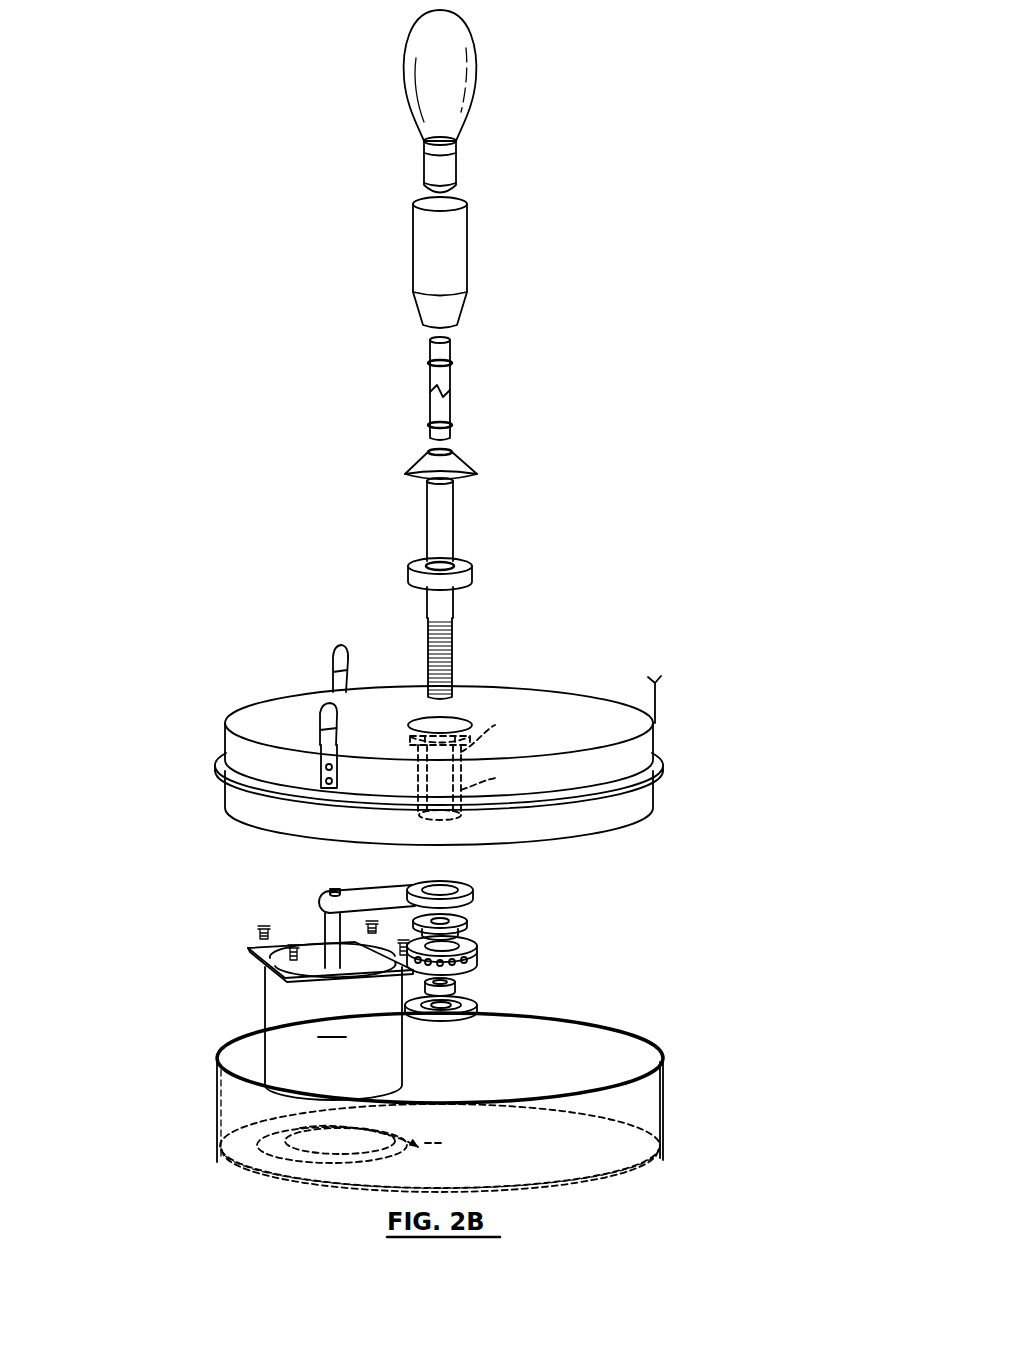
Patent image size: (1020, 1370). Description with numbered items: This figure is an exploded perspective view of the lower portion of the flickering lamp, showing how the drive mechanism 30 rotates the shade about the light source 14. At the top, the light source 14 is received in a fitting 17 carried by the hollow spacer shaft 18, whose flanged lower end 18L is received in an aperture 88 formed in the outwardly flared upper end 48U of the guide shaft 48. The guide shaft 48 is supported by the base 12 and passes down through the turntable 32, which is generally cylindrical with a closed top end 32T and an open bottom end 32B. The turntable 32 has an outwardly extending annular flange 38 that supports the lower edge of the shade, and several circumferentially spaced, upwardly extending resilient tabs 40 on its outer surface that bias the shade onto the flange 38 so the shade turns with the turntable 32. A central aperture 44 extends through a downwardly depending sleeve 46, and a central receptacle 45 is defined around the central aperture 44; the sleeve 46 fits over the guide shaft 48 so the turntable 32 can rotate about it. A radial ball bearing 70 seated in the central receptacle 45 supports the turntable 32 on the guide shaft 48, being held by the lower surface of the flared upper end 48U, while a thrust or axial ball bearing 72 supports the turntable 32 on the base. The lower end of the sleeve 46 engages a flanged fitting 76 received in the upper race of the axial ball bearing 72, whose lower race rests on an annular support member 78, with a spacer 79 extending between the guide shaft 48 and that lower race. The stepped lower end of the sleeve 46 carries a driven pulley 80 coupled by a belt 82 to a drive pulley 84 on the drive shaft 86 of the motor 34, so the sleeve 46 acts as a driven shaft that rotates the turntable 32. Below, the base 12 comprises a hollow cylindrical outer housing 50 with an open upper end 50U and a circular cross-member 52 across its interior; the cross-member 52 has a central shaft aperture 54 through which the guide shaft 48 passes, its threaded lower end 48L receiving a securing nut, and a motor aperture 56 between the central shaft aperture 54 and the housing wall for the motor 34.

The base 12 is at (455, 1069).
The light source 14 is at (490, 83).
The fitting 17 is at (458, 268).
The spacer shaft 18 is at (453, 404).
The flanged lower end of the spacer shaft 18L is at (420, 433).
The drive mechanism 30 is at (344, 975).
The turntable 32 is at (485, 732).
The closed top end of the turntable 32T is at (592, 712).
The open bottom end of the turntable 32B is at (609, 840).
The motor 34 is at (330, 1021).
The outwardly extending annular flange 38 is at (664, 772).
The resilient tabs 40 is at (336, 656).
The central aperture 44 is at (492, 742).
The central receptacle 45 is at (474, 712).
The sleeve 46 is at (494, 785).
The guide shaft 48 is at (454, 538).
The outwardly flared upper end of the guide shaft 48U is at (464, 474).
The threaded lower end of the guide shaft 48L is at (418, 652).
The outer housing 50 is at (441, 1069).
The open upper end of the housing 50U is at (651, 1032).
The cross-member 52 is at (659, 1165).
The central shaft aperture 54 is at (250, 1143).
The motor aperture 56 is at (260, 1152).
The radial ball bearing 70 is at (486, 574).
The axial ball bearing 72 is at (490, 958).
The flanged fitting 76 is at (476, 926).
The annular support member 78 is at (474, 1012).
The spacer 79 is at (458, 988).
The driven pulley 80 is at (476, 892).
The belt 82 is at (441, 882).
The drive pulley 84 is at (344, 892).
The drive shaft 86 is at (328, 932).
The aperture 88 is at (448, 451).